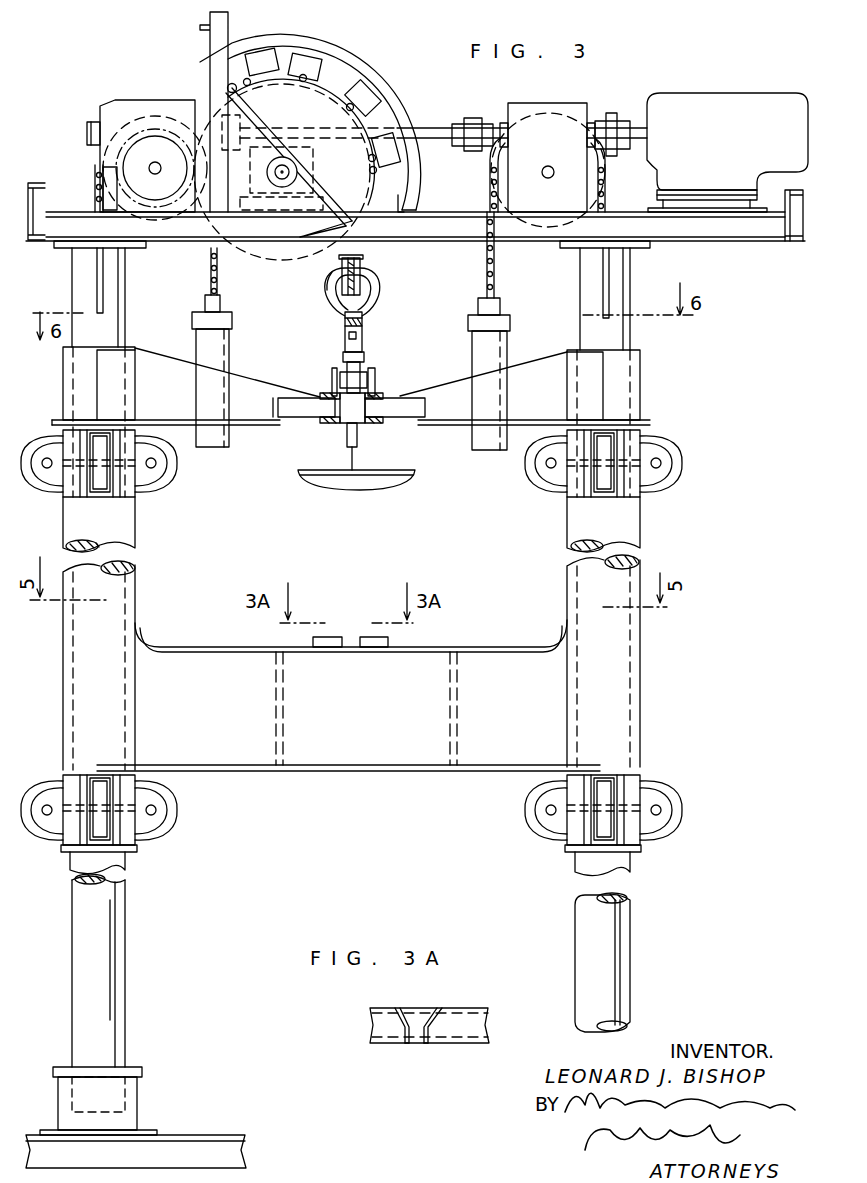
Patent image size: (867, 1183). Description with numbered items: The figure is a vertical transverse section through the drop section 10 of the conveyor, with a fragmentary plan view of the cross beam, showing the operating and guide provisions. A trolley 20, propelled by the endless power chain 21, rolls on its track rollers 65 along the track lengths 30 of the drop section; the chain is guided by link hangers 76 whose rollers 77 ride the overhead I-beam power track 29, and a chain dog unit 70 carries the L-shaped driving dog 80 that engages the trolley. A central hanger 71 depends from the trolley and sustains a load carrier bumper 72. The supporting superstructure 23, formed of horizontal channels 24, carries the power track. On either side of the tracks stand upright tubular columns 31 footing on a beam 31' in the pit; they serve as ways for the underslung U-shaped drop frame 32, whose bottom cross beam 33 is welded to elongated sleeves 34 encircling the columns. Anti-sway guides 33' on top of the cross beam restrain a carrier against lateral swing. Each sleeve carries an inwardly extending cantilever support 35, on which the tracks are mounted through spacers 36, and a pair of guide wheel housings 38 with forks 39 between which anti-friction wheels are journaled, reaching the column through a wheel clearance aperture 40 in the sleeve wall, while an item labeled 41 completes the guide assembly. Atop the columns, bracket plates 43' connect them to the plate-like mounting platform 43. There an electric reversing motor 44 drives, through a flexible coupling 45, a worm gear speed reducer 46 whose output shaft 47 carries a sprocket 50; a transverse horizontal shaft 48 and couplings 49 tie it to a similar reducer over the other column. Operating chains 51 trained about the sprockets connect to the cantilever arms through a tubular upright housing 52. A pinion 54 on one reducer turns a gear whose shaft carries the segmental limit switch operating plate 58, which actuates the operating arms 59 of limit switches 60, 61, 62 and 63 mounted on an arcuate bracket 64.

In FIG. 3, the drop section 10 is at (698, 382).
In FIG. 3, the trolley 20 is at (375, 357).
In FIG. 3, the endless power chain 21 is at (343, 323).
In FIG. 3, the supporting superstructure 23 is at (749, 246).
In FIG. 3, the horizontal channels 24 is at (48, 204).
In FIG. 3, the power track 29 is at (360, 262).
In FIG. 3, the track lengths 30 is at (332, 423).
In FIG. 3, the tubular columns 31 is at (361, 691).
In FIG. 3, the beam 31' is at (136, 1134).
In FIG. 3, the drop frame 32 is at (275, 769).
In FIG. 3A, the drop frame 32 is at (457, 1010).
In FIG. 3, the cross beam 33 is at (348, 708).
In FIG. 3A, the cross beam 33 is at (408, 1025).
In FIG. 3, the anti-sway guides 33' is at (350, 666).
In FIG. 3A, the anti-sway guides 33' is at (431, 1057).
In FIG. 3, the sleeves 34 is at (68, 400).
In FIG. 3, the cantilever support 35 is at (533, 372).
In FIG. 3, the spacers 36 is at (283, 397).
In FIG. 3, the guide wheel housings 38 is at (68, 488).
In FIG. 3, the forks 39 is at (136, 492).
In FIG. 3, the wheel clearance aperture 40 is at (107, 492).
In FIG. 3, the cam plate 41 is at (160, 486).
In FIG. 3, the mounting platform 43 is at (415, 257).
In FIG. 3, the bracket plates 43' is at (364, 260).
In FIG. 3, the electric reversing motor 44 is at (722, 104).
In FIG. 3, the flexible coupling 45 is at (613, 125).
In FIG. 3, the speed reducer 46 is at (125, 110).
In FIG. 3, the output shaft 47 is at (155, 174).
In FIG. 3, the transverse horizontal shaft 48 is at (437, 132).
In FIG. 3, the couplings 49 is at (472, 125).
In FIG. 3, the sprockets 50 is at (598, 191).
In FIG. 3, the operating chains 51 is at (211, 272).
In FIG. 3, the tubular upright housing 52 is at (472, 348).
In FIG. 3, the pinion 54 is at (167, 140).
In FIG. 3, the limit switch operating plate 58 is at (330, 210).
In FIG. 3, the operating arms 59 is at (250, 84).
In FIG. 3, the limit switch 60 is at (264, 54).
In FIG. 3, the limit switch 61 is at (318, 64).
In FIG. 3, the limit switch 62 is at (370, 108).
In FIG. 3, the limit switch 63 is at (382, 178).
In FIG. 3, the arcuate bracket 64 is at (363, 70).
In FIG. 3, the track rollers 65 is at (375, 379).
In FIG. 3, the chain dog unit 70 is at (373, 329).
In FIG. 3, the central hanger 71 is at (348, 426).
In FIG. 3, the load carrier bumper 72 is at (312, 483).
In FIG. 3, the link hangers 76 is at (380, 300).
In FIG. 3, the rollers 77 is at (330, 290).
In FIG. 3, the driving dog 80 is at (344, 345).